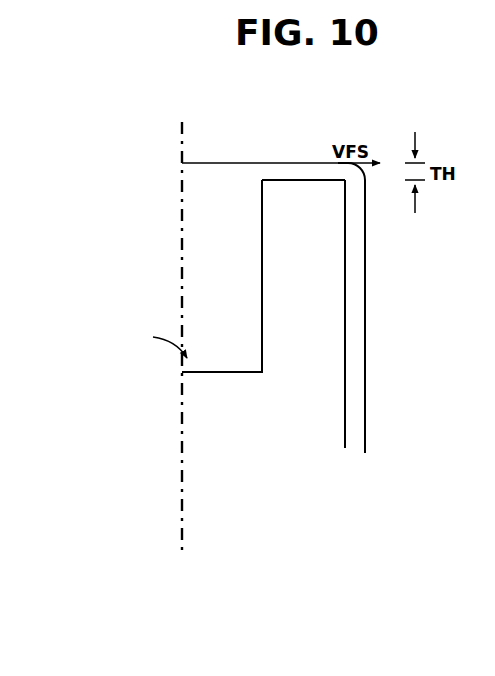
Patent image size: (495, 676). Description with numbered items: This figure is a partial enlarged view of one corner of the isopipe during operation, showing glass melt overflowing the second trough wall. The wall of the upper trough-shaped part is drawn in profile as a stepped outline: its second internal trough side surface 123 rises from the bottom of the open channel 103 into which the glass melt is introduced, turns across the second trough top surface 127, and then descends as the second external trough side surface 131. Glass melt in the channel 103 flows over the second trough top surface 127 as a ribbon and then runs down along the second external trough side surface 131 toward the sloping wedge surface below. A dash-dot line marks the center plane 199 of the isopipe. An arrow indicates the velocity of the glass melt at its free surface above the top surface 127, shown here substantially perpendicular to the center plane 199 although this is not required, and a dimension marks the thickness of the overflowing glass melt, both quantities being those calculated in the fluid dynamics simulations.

The center plane 199 is at (190, 145).
The open channel 103 is at (295, 295).
The second internal trough side surface 123 is at (257, 310).
The second trough top surface 127 is at (307, 176).
The second external trough side surface 131 is at (349, 319).